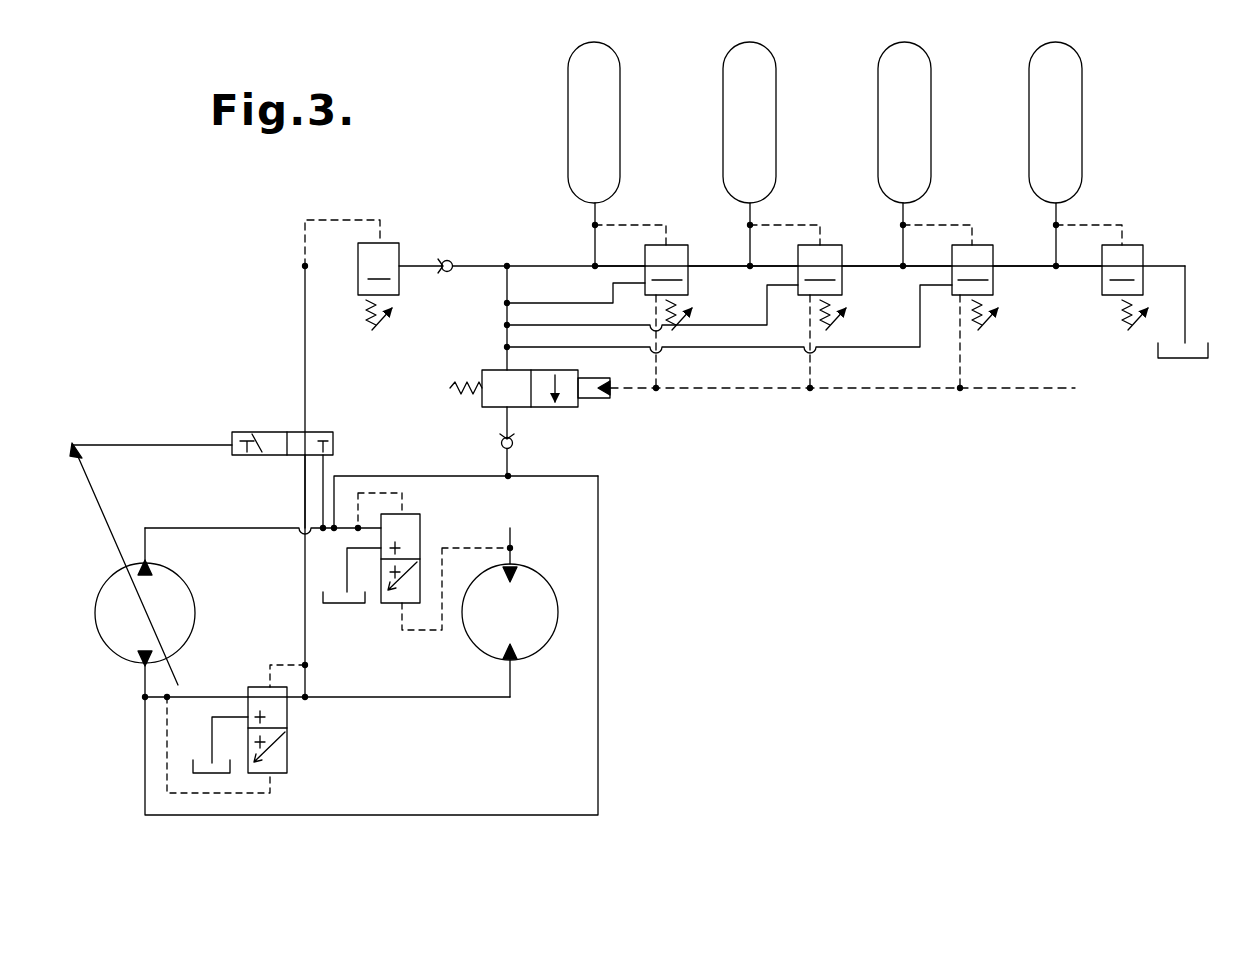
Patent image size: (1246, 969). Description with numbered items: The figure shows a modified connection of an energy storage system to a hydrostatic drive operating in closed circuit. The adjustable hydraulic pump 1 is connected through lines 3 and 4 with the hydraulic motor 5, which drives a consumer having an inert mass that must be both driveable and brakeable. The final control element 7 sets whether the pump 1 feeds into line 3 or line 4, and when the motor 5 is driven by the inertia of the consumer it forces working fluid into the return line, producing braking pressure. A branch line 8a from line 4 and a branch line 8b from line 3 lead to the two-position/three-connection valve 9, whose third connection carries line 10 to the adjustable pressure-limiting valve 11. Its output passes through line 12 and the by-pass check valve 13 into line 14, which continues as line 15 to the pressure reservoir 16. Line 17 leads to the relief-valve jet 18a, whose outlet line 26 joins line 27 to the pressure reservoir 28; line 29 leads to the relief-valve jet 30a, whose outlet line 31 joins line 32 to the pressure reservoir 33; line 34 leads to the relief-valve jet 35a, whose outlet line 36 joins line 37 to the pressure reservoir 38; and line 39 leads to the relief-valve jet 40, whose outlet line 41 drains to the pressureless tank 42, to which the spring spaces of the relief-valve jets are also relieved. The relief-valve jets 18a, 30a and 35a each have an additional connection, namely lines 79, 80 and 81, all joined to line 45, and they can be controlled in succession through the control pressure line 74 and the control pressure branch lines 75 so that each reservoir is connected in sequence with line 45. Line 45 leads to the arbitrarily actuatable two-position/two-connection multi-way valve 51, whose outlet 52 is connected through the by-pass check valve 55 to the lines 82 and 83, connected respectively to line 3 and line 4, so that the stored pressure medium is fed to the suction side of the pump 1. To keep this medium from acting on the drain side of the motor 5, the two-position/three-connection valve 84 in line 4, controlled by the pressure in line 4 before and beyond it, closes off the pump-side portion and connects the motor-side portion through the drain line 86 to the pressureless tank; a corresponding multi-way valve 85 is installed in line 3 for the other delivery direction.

The adjustable hydraulic pump 1 is at (195, 600).
The line 3 is at (272, 530).
The line 4 is at (422, 692).
The hydraulic motor 5 is at (540, 655).
The final control element 7 is at (100, 490).
The branch line 8a is at (302, 490).
The branch line 8b is at (326, 475).
The 2-position/3-connection valve 9 is at (270, 410).
The line 10 is at (304, 348).
The adjustable pressure-limiting valve 11 is at (378, 286).
The line 12 is at (415, 262).
The by-pass check valve 13 is at (450, 259).
The line 14 is at (480, 262).
The line 15 is at (597, 215).
The pressure reservoir 16 is at (620, 125).
The line 17 is at (618, 262).
The relief-valve jet 18a is at (668, 287).
The line 26 is at (720, 262).
The line 27 is at (752, 215).
The pressure reservoir 28 is at (776, 130).
The line 29 is at (778, 262).
The relief-valve jet 30a is at (822, 287).
The line 31 is at (875, 262).
The line 32 is at (905, 215).
The pressure reservoir 33 is at (931, 130).
The line 34 is at (928, 262).
The relief-valve jet 35a is at (975, 287).
The line 36 is at (1027, 262).
The line 37 is at (1058, 215).
The pressure reservoir 38 is at (1082, 130).
The line 39 is at (1082, 270).
The relief-valve jet 40 is at (1125, 287).
The line 41 is at (1187, 310).
The pressureless tank 42 is at (1190, 362).
The line 45 is at (504, 349).
The 2-position/2-connection multi-way valve 51 is at (572, 410).
The outlet 52 is at (503, 425).
The by-pass check valve 55 is at (512, 448).
The control pressure line 74 is at (718, 390).
The control pressure branch lines 75 is at (986, 370).
The line 79 is at (575, 292).
The line 80 is at (743, 325).
The line 81 is at (894, 344).
The line 82 is at (390, 474).
The line 83 is at (600, 600).
The 2-position/3-connection valve 84 is at (288, 762).
The multi-way valve 85 is at (420, 510).
The pilot line 86 is at (210, 720).